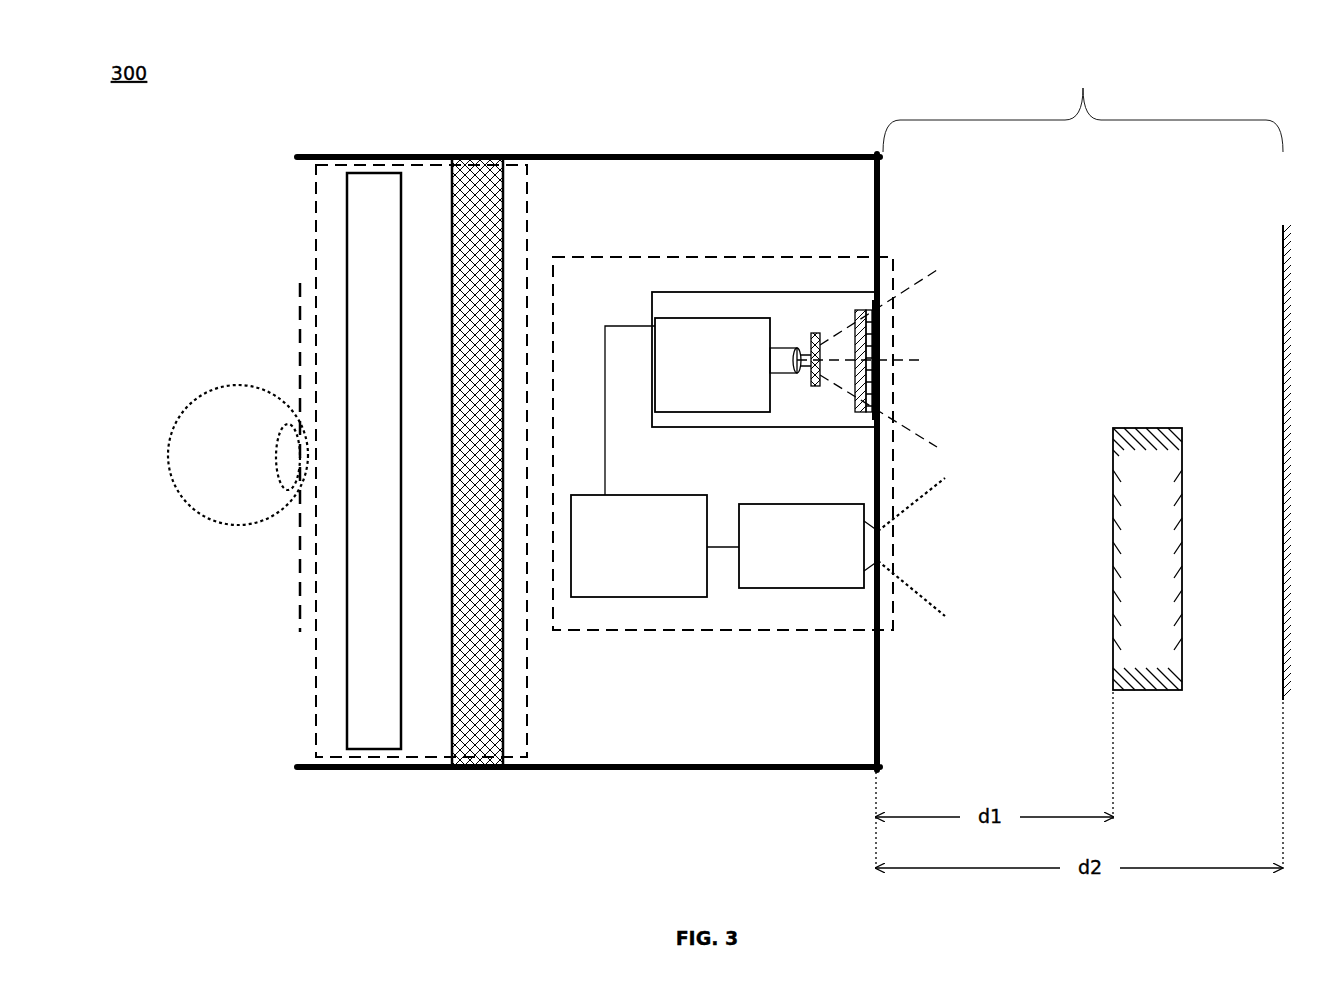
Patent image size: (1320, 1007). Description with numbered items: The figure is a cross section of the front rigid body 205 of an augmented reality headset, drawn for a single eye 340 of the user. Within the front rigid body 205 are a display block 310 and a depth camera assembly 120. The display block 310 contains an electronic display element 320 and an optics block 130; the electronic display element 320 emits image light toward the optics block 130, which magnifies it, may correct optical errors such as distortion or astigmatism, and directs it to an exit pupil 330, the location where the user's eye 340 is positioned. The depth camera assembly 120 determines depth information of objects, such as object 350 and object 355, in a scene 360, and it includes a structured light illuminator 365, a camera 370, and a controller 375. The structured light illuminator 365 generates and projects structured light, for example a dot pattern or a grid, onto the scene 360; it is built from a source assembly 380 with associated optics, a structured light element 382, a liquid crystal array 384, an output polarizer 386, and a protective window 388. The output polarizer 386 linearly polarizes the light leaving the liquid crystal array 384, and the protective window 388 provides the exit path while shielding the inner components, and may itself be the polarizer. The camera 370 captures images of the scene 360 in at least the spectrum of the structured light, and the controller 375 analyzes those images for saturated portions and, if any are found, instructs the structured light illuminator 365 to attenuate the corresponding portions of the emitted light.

The front rigid body 205 is at (740, 772).
The display block 310 is at (312, 666).
The optics block 130 is at (392, 720).
The electronic display element 320 is at (466, 184).
The exit pupil 330 is at (297, 400).
The eye 340 is at (206, 536).
The depth camera assembly 120 is at (656, 634).
The structured light illuminator 365 is at (665, 291).
The source assembly 380 is at (733, 365).
The structured light element 382 is at (817, 332).
The liquid crystal array 384 is at (860, 306).
The output polarizer 386 is at (874, 340).
The protective window 388 is at (880, 374).
The controller 375 is at (655, 461).
The camera 370 is at (842, 547).
The scene 360 is at (1083, 93).
The object 350 is at (1110, 503).
The object 355 is at (1280, 667).